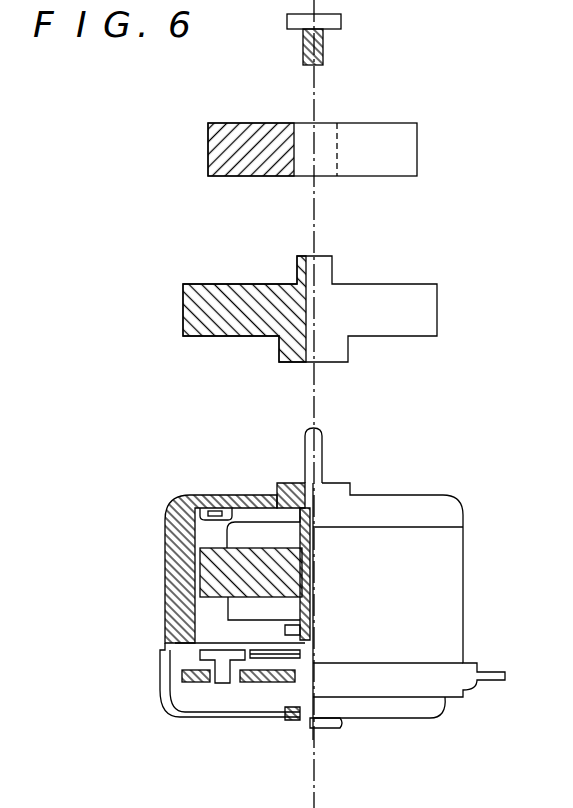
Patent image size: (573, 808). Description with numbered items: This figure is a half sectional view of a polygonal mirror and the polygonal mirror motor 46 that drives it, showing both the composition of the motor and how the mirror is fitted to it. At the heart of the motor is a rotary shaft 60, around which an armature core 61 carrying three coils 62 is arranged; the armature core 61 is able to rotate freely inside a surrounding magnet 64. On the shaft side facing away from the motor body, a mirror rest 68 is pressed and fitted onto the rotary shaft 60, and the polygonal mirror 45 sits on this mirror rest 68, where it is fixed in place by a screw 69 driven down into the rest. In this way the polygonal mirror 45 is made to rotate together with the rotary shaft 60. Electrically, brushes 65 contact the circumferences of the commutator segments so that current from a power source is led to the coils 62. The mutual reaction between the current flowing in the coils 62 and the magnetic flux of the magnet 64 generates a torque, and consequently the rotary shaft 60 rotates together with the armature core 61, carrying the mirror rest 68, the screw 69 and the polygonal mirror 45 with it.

The screw 69 is at (323, 44).
The polygonal mirror 45 is at (383, 135).
The mirror rest 68 is at (378, 298).
The rotary shaft 60 is at (322, 445).
The polygonal mirror motor 46 is at (476, 504).
The magnet 64 is at (186, 522).
The coils 62 is at (261, 530).
The armature core 61 is at (283, 574).
The brushes 65 is at (265, 665).